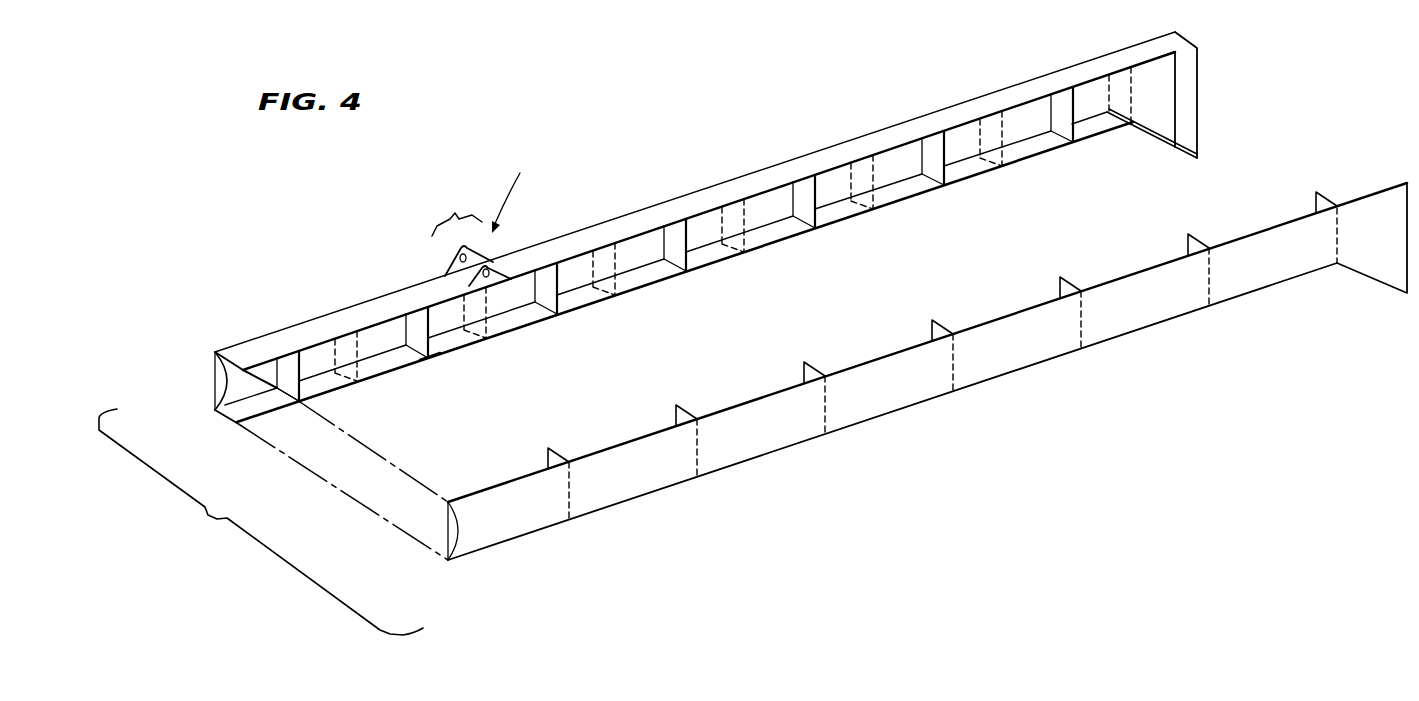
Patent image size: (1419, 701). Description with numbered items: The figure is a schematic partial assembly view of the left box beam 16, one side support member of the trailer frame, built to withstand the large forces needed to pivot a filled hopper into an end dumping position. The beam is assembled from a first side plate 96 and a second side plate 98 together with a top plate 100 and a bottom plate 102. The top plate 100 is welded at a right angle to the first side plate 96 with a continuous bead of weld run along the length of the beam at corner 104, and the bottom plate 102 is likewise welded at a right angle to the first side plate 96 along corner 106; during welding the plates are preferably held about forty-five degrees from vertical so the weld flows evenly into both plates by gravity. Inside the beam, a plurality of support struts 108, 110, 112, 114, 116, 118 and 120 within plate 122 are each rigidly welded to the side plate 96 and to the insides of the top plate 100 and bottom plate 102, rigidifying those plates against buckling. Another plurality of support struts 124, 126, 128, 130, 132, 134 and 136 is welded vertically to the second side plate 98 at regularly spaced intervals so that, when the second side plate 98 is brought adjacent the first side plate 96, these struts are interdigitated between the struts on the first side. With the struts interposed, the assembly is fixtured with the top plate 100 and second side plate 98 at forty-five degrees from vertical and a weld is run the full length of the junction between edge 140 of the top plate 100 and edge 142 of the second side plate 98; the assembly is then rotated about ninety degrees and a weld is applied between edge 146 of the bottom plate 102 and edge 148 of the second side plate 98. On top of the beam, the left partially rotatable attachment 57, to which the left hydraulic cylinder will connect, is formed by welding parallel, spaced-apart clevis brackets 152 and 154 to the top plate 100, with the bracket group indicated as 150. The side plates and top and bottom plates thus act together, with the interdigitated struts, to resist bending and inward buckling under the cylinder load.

The left box beam 16 is at (195, 554).
The left partially rotatable attachment 57 is at (521, 191).
The first side plate 96 is at (226, 383).
The second side plate 98 is at (517, 528).
The top plate 100 is at (320, 327).
The bottom plate 102 is at (317, 397).
The corner 104 is at (213, 352).
The corner 106 is at (213, 408).
The support strut 108 is at (290, 357).
The support strut 110 is at (407, 311).
The support strut 112 is at (573, 307).
The support strut 114 is at (688, 257).
The support strut 116 is at (826, 218).
The support strut 118 is at (937, 175).
The support strut 120 is at (1062, 135).
The plate 122 is at (1187, 72).
The support strut 124 is at (550, 448).
The support strut 126 is at (680, 403).
The support strut 128 is at (808, 362).
The support strut 130 is at (935, 320).
The vertical support strut 132 is at (1062, 278).
The support strut 134 is at (1190, 235).
The support strut 136 is at (1317, 192).
The edge 140 is at (357, 303).
The edge 142 is at (508, 492).
The edge 146 is at (430, 360).
The edge 148 is at (628, 505).
The bracket assembly 150 is at (476, 204).
The clevis bracket 152 is at (447, 262).
The clevis bracket 154 is at (470, 284).